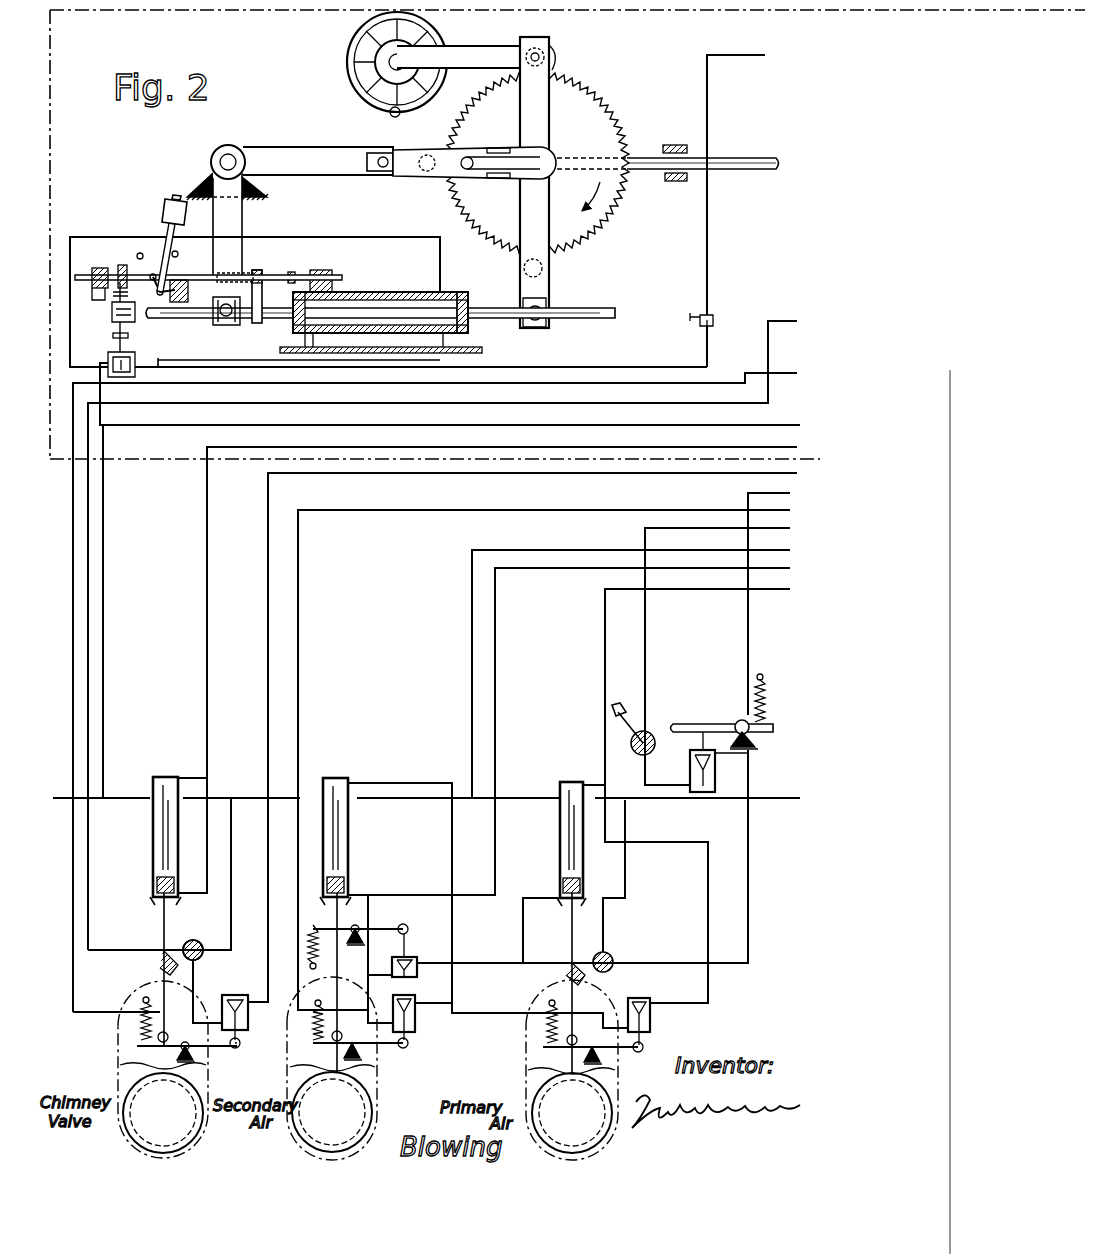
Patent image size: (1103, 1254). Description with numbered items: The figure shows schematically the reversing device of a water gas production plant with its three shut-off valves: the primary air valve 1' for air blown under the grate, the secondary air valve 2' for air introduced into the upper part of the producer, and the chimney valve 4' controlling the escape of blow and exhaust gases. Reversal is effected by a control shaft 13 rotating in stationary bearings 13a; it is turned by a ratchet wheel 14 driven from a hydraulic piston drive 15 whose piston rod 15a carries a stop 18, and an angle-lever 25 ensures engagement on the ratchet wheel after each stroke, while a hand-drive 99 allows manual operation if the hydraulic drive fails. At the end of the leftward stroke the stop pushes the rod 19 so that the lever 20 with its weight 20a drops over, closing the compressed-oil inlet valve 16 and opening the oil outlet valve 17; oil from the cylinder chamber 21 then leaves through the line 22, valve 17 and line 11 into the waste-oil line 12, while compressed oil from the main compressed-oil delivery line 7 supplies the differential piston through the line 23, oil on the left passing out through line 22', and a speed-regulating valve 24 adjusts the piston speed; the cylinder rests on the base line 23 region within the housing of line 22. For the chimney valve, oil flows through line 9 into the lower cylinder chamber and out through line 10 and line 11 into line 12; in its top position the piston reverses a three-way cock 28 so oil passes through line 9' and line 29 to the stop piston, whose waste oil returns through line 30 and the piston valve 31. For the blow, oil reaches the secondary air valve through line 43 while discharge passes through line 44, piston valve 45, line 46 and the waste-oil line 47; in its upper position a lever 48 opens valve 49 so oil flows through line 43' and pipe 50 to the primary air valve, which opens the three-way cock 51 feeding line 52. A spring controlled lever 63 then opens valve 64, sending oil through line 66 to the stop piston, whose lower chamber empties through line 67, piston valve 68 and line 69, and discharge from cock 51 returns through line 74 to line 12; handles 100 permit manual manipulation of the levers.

The main compressed-oil delivery line 7 is at (765, 55).
The hand-drive 99 is at (375, 95).
The ratchet wheel 14 is at (513, 182).
The control shaft 13 is at (652, 156).
The stationary bearings 13a is at (688, 150).
The angle-lever 25 is at (287, 158).
The line 22 is at (255, 288).
The line 22' is at (381, 362).
The line 23 is at (548, 367).
The hydraulic piston drive 15 is at (378, 302).
The piston rod 15a is at (275, 322).
The cylinder chamber 21 is at (463, 297).
The stop 18 is at (265, 280).
The rod 19 is at (199, 277).
The lever 20 is at (185, 230).
The weight 20a is at (163, 212).
The compressed-oil inlet valve 16 is at (130, 320).
The oil outlet valve 17 is at (137, 365).
The speed-regulating valve 24 is at (690, 328).
The line 30 is at (790, 365).
The line 29 is at (786, 321).
The line 11 is at (438, 431).
The line 9 is at (487, 661).
The line 10 is at (438, 493).
The line 67 is at (537, 510).
The waste-oil line 47 is at (786, 550).
The line 43 is at (608, 731).
The line 46 is at (780, 595).
The line 66 is at (784, 533).
The line 52 is at (786, 493).
The waste-oil line 12 is at (125, 797).
The line 44 is at (402, 780).
The pipe 50 is at (468, 970).
The line 74 is at (630, 887).
The line 69 is at (430, 1002).
The line 43' is at (387, 959).
The chimney valve 4' is at (177, 967).
The line 9' is at (202, 965).
The three-way cock 28 is at (205, 958).
The piston valve 31 is at (248, 1038).
The secondary air valve 2' is at (332, 969).
The lever 48 is at (340, 940).
The valve 49 is at (428, 950).
The piston valve 68 is at (418, 1030).
The primary air valve 1' is at (584, 971).
The three-way cock 51 is at (618, 952).
The piston valve 45 is at (652, 1016).
The handles 100 is at (690, 715).
The spring controlled lever 63 is at (722, 724).
The valve 64 is at (716, 785).